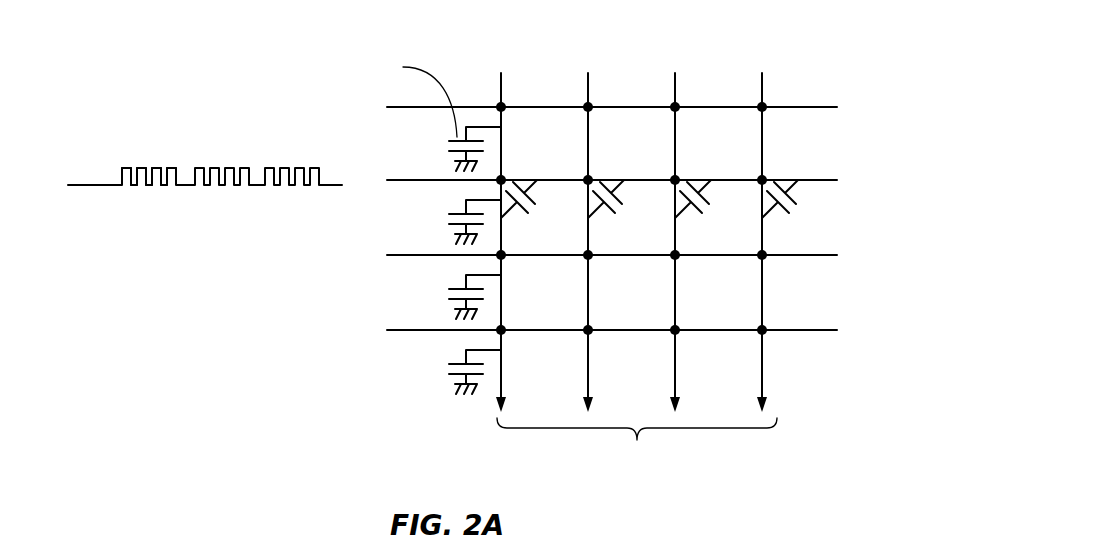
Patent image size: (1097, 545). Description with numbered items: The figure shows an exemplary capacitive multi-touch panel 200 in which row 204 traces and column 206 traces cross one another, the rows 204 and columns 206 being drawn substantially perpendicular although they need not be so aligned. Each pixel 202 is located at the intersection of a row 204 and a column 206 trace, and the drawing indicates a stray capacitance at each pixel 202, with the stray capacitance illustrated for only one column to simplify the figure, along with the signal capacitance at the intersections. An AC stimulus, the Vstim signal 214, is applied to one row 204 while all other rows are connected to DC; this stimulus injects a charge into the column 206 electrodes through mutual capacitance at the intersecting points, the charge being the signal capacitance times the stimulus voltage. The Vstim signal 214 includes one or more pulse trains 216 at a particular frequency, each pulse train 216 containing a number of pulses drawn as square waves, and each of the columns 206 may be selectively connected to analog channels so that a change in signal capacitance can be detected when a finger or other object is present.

The capacitive multi-touch panel 200 is at (715, 43).
The pixel 202 is at (765, 102).
The row 204 is at (813, 177).
The column 206 is at (763, 312).
The Vstim signal 214 is at (97, 188).
The pulse train 216 is at (182, 162).